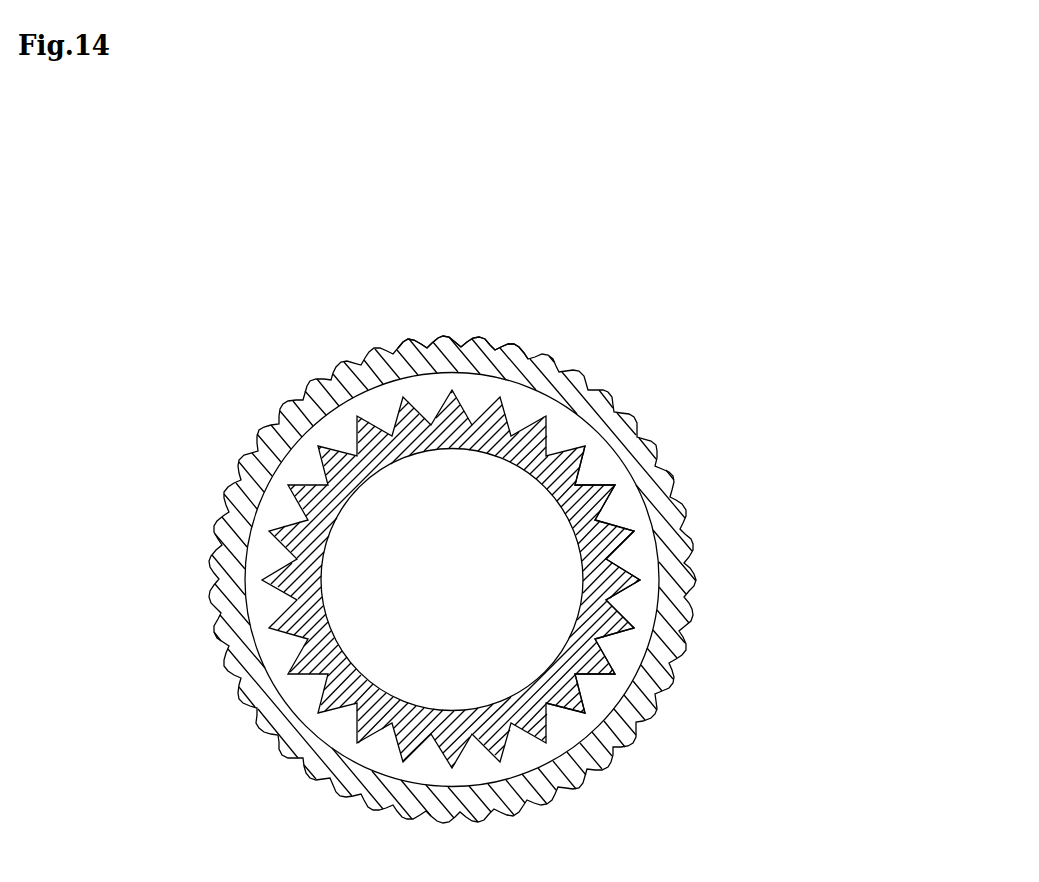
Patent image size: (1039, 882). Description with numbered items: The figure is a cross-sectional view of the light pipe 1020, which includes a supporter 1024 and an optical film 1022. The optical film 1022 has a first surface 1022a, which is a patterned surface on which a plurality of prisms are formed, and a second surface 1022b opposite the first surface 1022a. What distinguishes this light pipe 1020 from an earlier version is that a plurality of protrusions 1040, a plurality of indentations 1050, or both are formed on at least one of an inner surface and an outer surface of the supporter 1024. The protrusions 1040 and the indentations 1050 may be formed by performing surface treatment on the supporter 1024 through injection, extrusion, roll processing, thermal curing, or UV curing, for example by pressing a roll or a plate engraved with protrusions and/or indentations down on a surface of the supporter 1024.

The light pipe 1020 is at (764, 167).
The optical film 1022 is at (620, 620).
The first surface 1022a is at (625, 570).
The second surface 1022b is at (585, 650).
The supporter 1024 is at (653, 485).
The protrusions 1040 is at (485, 340).
The indentations 1050 is at (503, 348).